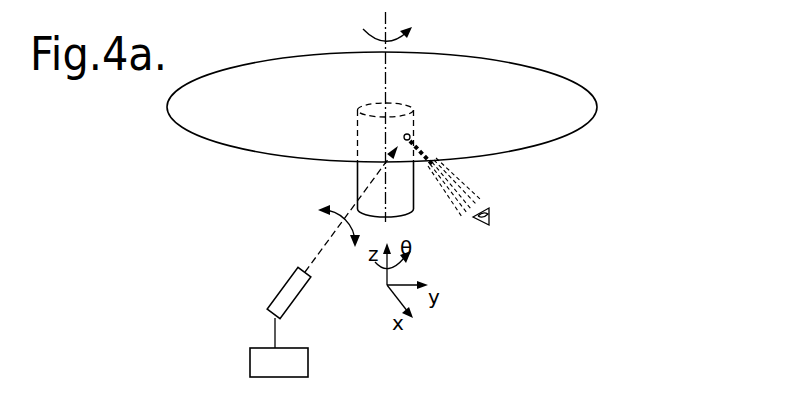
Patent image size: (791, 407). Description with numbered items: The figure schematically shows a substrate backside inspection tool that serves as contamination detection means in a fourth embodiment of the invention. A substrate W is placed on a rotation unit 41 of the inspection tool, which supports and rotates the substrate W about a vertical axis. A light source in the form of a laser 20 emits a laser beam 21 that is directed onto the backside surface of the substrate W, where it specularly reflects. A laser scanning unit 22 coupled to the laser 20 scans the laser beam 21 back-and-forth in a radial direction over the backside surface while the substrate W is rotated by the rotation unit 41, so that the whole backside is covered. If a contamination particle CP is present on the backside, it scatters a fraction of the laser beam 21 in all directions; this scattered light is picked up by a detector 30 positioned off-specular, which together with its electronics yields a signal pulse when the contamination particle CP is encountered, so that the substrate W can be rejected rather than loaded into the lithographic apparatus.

The substrate W is at (472, 66).
The contamination particle CP is at (411, 137).
The rotation unit 41 is at (414, 208).
The detector 30 is at (490, 214).
The laser beam 21 is at (328, 242).
The laser 20 is at (290, 288).
The laser scanning unit 22 is at (258, 358).